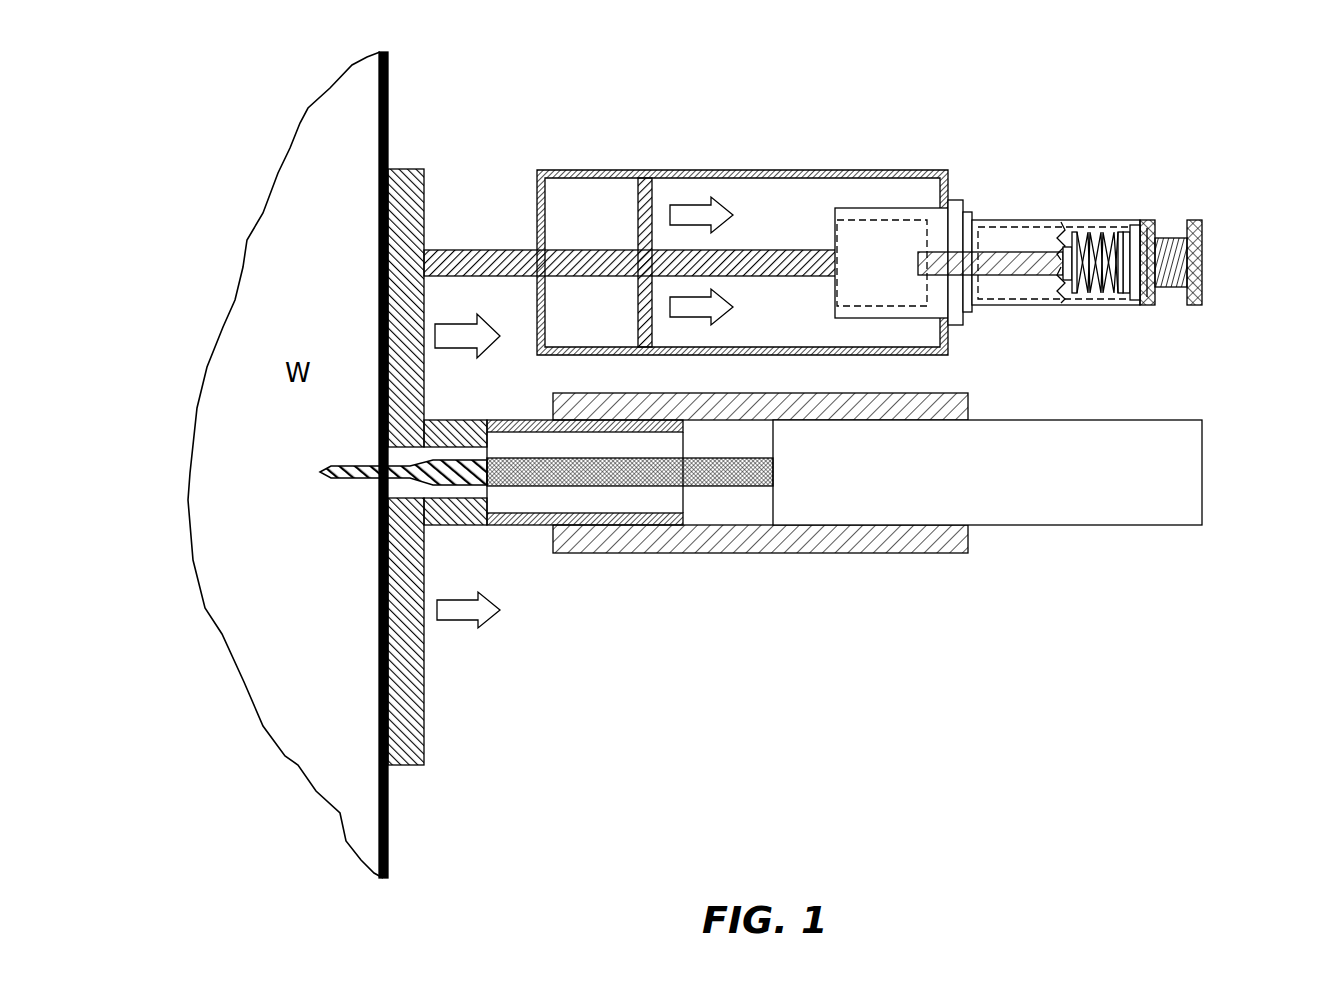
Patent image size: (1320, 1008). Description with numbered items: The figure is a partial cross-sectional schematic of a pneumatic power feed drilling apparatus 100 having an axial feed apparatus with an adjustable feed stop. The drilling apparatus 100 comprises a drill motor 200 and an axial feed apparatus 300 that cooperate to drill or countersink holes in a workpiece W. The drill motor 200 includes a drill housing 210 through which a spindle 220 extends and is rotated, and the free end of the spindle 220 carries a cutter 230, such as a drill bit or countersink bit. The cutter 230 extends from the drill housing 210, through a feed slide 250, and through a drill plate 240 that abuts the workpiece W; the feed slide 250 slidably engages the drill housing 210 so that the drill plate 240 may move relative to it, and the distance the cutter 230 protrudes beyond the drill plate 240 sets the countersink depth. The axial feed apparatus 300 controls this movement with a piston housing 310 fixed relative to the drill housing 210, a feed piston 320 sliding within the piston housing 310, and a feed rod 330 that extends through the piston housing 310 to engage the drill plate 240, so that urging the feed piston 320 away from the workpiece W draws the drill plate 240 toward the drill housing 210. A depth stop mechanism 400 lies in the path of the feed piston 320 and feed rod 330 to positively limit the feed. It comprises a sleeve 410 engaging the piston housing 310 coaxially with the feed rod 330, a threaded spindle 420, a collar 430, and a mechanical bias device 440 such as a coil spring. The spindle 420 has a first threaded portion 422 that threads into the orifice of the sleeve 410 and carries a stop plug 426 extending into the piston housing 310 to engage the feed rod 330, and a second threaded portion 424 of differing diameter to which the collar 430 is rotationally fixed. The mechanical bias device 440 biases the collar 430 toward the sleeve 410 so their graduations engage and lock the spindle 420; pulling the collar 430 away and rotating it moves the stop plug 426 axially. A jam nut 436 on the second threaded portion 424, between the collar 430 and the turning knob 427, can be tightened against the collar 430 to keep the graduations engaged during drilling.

The drilling apparatus 100 is at (935, 640).
The drill motor 200 is at (1110, 401).
The drill housing 210 is at (777, 394).
The spindle 220 is at (718, 486).
The cutter 230 is at (342, 485).
The drill plate 240 is at (424, 367).
The feed slide 250 is at (507, 408).
The axial feed apparatus 300 is at (850, 243).
The piston housing 310 is at (743, 170).
The feed piston 320 is at (638, 192).
The feed rod 330 is at (775, 250).
The depth stop mechanism 400 is at (1069, 262).
The sleeve 410 is at (956, 312).
The spindle 420 is at (1010, 270).
The first threaded portion 422 is at (1004, 276).
The second threaded portion 424 is at (1166, 240).
The stop plug 426 is at (915, 263).
The turning knob 427 is at (1203, 243).
The collar 430 is at (1133, 305).
The jam nut 436 is at (1148, 296).
The mechanical bias device 440 is at (1100, 233).